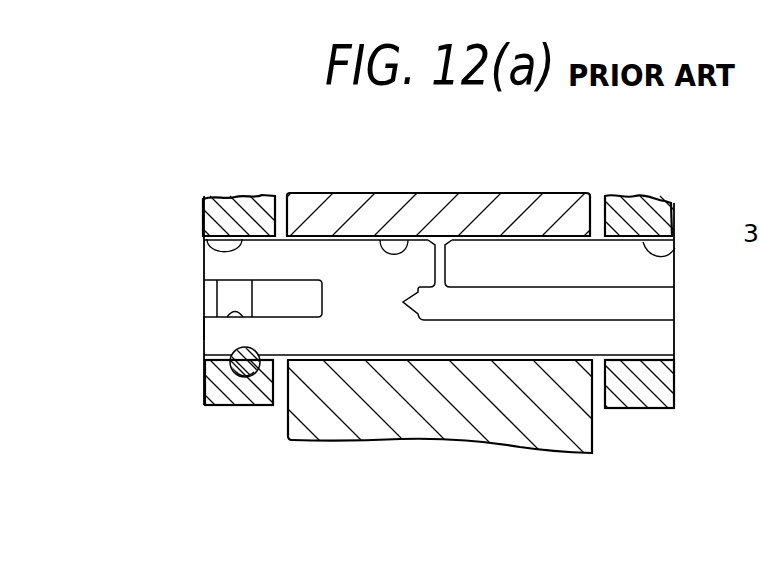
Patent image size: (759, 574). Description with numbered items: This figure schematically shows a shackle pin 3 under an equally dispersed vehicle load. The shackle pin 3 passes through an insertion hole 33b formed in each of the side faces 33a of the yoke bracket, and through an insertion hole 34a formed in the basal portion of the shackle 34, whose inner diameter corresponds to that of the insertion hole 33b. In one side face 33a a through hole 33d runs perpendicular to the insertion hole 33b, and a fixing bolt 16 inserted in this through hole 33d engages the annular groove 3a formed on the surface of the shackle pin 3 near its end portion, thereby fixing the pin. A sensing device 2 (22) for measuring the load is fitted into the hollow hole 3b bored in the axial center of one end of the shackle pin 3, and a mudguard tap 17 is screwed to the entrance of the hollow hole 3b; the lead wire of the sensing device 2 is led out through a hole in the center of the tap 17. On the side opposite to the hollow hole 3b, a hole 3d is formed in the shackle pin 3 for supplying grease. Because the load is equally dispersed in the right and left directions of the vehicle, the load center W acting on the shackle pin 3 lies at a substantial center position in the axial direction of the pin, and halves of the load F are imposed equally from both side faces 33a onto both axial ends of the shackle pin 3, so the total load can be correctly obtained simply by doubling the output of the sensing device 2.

The sensing device 2 is at (217, 276).
The bolt 22 is at (273, 295).
The shackle pin 3 is at (678, 275).
The annular groove 3a is at (250, 352).
The hollow hole 3b is at (207, 320).
The hole 3d is at (650, 318).
The fixing bolt 16 is at (228, 380).
The mudguard tap 17 is at (210, 298).
The side faces 33a is at (215, 378).
The insertion hole 33b is at (205, 232).
The through hole 33d is at (257, 373).
The shackle 34 is at (570, 433).
The insertion hole 34a is at (410, 243).
The load center W is at (440, 362).
The load F is at (238, 155).